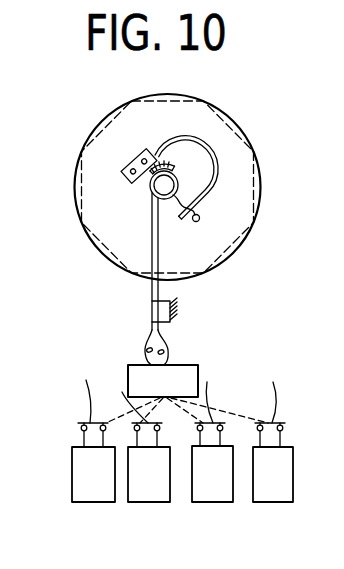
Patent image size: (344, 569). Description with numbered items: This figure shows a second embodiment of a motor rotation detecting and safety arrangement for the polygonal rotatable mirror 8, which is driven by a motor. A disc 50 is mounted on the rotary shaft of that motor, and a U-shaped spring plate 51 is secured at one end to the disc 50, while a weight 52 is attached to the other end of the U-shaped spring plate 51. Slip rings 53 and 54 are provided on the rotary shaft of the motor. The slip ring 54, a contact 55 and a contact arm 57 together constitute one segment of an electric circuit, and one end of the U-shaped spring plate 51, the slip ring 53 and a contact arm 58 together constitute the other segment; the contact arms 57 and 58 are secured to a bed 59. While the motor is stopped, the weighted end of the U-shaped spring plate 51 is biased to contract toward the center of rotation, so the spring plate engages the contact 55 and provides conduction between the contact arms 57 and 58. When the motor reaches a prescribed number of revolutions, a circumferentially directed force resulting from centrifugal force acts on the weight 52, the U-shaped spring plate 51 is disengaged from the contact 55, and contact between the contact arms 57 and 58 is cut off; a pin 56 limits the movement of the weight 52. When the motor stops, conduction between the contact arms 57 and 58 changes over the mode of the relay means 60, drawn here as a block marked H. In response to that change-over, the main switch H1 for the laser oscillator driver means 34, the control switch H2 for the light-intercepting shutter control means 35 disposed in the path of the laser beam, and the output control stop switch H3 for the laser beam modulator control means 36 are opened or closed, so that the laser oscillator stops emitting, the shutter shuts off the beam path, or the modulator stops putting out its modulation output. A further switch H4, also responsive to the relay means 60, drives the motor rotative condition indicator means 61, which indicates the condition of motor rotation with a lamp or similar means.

The polygonal rotatable mirror 8 is at (77, 183).
The disc 50 is at (76, 203).
The U-shaped spring plate 51 is at (207, 136).
The weight 52 is at (200, 216).
The slip ring 53 is at (156, 158).
The slip ring 54 is at (203, 190).
The contact 55 is at (172, 205).
The pin 56 is at (197, 222).
The contact arm 57 is at (151, 287).
The contact arm 58 is at (159, 286).
The bed 59 is at (167, 320).
The relay means 60 is at (142, 371).
The motor rotative condition indicator means 61 is at (93, 487).
The laser beam modulator control means 36 is at (147, 487).
The light-intercepting shutter control means 35 is at (207, 484).
The laser oscillator driver means 34 is at (270, 484).
The controller H is at (163, 381).
The main switch H1 is at (261, 396).
The control switch H2 is at (220, 396).
The output control stop switch H3 is at (122, 396).
The switch H4 is at (73, 396).